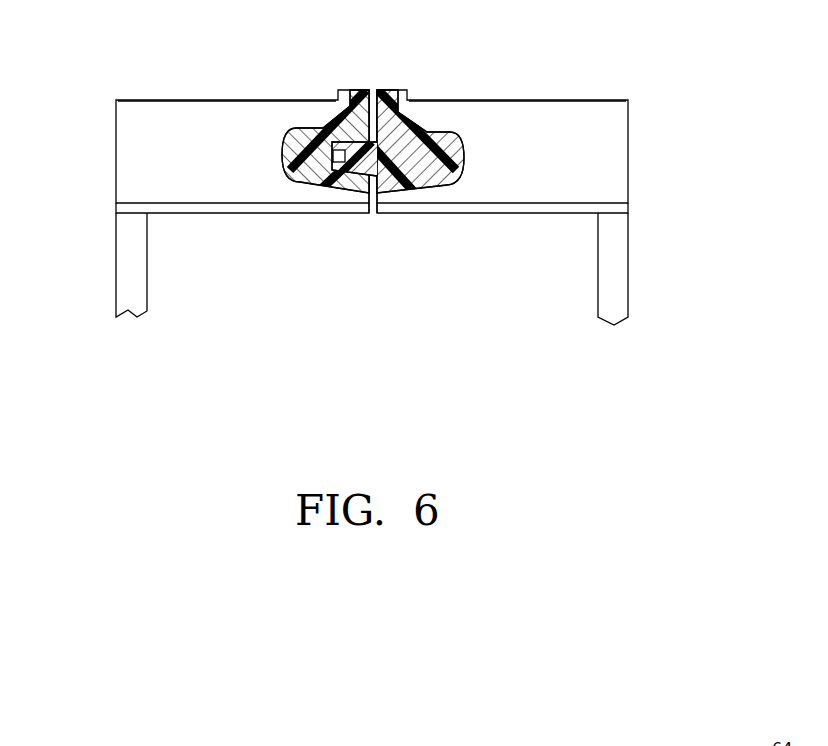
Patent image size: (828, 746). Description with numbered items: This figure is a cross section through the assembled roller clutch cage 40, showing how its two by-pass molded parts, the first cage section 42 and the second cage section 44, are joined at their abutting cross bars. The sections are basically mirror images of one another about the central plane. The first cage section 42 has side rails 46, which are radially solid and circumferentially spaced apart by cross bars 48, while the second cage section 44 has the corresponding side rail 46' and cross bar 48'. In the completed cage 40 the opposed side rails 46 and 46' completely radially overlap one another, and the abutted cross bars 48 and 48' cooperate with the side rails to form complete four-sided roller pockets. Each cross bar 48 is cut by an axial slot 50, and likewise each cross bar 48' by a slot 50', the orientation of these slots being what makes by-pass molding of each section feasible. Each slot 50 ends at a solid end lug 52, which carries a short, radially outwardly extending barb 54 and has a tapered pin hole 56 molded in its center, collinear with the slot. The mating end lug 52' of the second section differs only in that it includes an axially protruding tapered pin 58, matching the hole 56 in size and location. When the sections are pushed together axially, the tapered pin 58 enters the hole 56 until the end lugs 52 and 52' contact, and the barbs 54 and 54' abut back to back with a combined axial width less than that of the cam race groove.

The roller clutch cage 40 is at (319, 62).
The first cage section 42 is at (157, 100).
The second cage section 44 is at (522, 100).
The side rail 46 is at (92, 280).
The second cage section side rail 46' is at (662, 269).
The cross bar 48 is at (242, 238).
The cross bar 48' is at (502, 229).
The slot 50 is at (227, 68).
The slot 50' is at (528, 67).
The end lug 52 is at (333, 230).
The end lug 52' is at (399, 227).
The barb 54 is at (325, 98).
The barb 54' is at (420, 99).
The tapered pin hole 56 is at (333, 156).
The tapered pin 58 is at (358, 178).